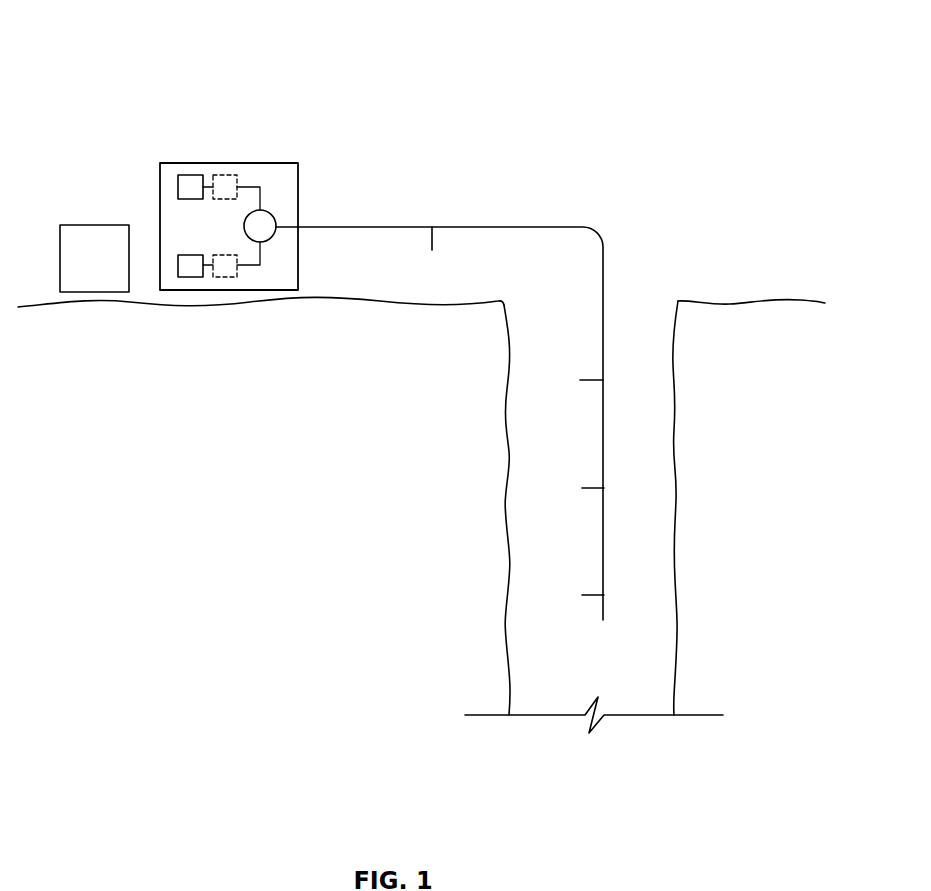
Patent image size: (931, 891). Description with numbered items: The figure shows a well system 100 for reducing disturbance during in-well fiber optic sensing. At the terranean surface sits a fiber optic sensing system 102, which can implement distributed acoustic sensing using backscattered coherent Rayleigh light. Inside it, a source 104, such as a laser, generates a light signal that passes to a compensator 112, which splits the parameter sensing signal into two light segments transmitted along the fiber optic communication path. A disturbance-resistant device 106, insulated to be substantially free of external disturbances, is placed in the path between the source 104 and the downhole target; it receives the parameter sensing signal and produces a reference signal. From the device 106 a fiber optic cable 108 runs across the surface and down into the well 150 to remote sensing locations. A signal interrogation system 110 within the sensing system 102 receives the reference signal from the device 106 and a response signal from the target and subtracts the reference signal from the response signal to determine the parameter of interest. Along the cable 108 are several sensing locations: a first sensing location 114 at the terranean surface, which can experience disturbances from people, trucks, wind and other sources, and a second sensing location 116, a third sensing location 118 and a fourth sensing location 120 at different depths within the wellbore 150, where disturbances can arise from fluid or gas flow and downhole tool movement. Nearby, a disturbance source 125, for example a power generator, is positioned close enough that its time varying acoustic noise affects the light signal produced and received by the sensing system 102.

The well system 100 is at (171, 42).
The fiber optic sensing system 102 is at (285, 163).
The source 104 is at (190, 175).
The device 106 is at (272, 213).
The fiber optic cable 108 is at (344, 229).
The signal interrogation system 110 is at (190, 277).
The compensator 112 is at (232, 175).
The first sensing location 114 is at (434, 238).
The second sensing location 116 is at (603, 367).
The third sensing location 118 is at (602, 483).
The fourth sensing location 120 is at (602, 590).
The disturbance source 125 is at (94, 258).
The well 150 is at (678, 486).